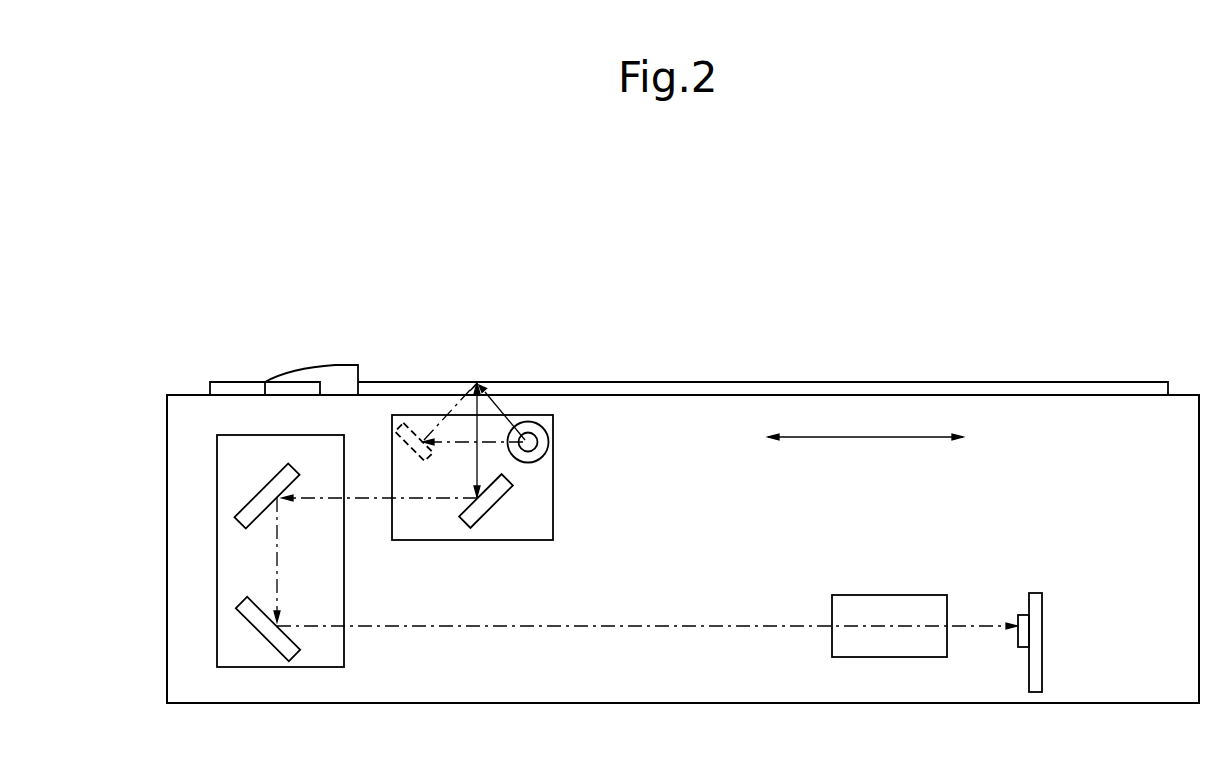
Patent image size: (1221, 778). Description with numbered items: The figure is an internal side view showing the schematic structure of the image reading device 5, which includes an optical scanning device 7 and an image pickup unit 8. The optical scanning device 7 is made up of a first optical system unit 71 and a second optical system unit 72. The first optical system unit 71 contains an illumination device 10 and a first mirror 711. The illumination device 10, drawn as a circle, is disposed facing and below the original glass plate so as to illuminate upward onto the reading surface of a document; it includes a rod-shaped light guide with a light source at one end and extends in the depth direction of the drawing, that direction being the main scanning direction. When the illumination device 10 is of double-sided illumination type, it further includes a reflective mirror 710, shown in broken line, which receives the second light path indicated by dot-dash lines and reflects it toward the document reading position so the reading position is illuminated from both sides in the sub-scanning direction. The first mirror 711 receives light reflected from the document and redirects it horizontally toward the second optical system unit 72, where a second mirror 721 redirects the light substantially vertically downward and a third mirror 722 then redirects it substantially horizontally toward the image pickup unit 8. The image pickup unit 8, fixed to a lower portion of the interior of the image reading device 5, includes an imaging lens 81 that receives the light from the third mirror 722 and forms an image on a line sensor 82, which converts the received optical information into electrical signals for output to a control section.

The image reading device 5 is at (1102, 340).
The optical scanning device 7 is at (657, 532).
The image pickup unit 8 is at (1055, 573).
The illumination device 10 is at (534, 428).
The first optical system unit 71 is at (553, 450).
The second optical system unit 72 is at (217, 561).
The imaging lens 81 is at (889, 594).
The line sensor 82 is at (1042, 635).
The reflective mirror 710 is at (402, 428).
The first mirror 711 is at (497, 508).
The second mirror 721 is at (262, 487).
The third mirror 722 is at (262, 637).